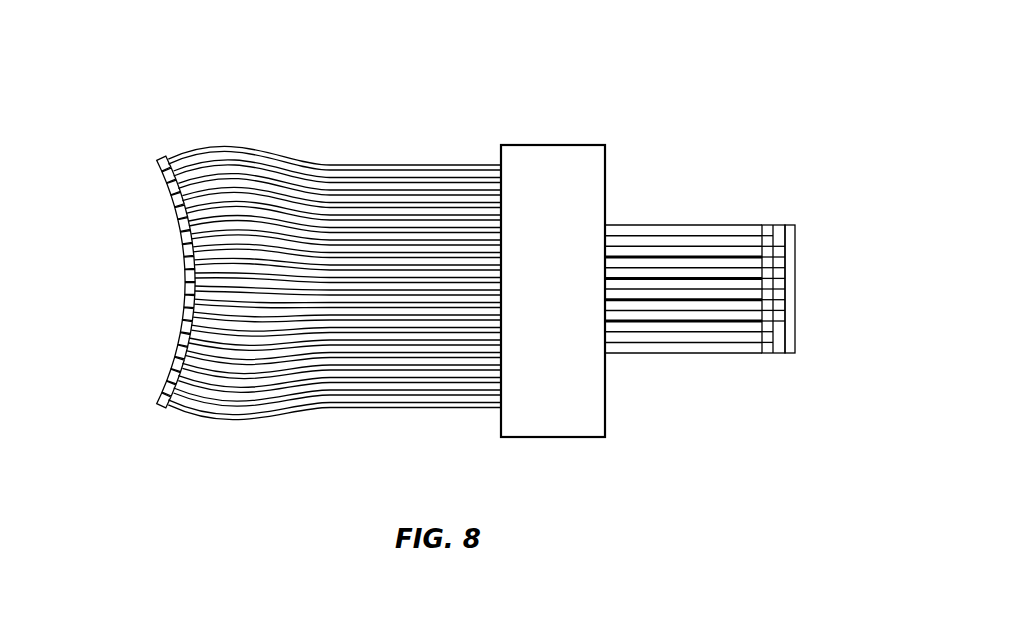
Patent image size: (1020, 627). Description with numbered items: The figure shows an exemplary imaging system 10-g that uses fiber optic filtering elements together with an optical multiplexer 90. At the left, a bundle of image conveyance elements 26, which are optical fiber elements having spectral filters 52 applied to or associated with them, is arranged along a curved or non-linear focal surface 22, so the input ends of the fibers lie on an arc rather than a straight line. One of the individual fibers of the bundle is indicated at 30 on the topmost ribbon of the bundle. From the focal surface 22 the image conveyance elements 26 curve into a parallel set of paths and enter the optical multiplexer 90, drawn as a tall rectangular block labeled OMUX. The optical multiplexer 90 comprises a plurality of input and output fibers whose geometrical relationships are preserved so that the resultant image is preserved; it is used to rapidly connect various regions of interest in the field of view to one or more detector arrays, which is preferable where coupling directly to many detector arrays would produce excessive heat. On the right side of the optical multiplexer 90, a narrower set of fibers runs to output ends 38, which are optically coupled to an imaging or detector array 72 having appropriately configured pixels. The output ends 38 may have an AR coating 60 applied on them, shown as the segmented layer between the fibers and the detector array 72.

The imaging system 10-g is at (722, 92).
The focal surface 22 is at (127, 282).
The image conveyance elements 26 is at (465, 269).
The fiber ribbon 30 is at (192, 150).
The output ends 38 is at (752, 352).
The spectral filters 52 is at (183, 243).
The AR coating 60 is at (765, 225).
The imaging or detector array 72 is at (796, 336).
The optical multiplexer 90 is at (548, 438).